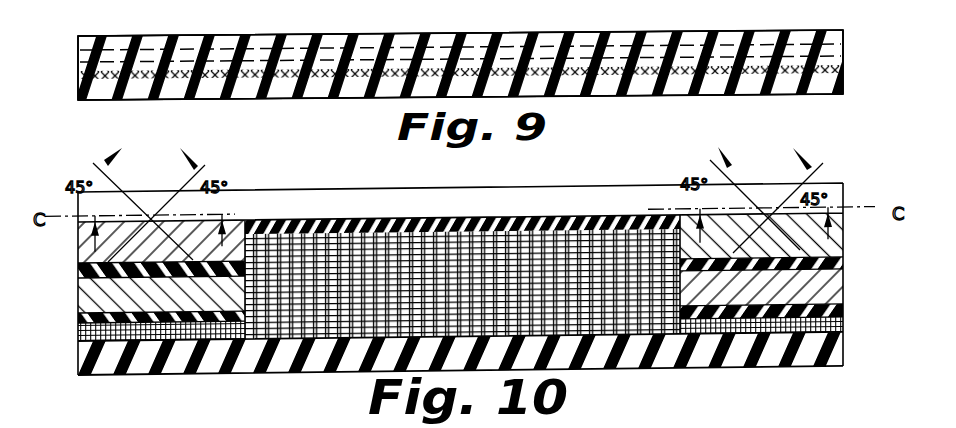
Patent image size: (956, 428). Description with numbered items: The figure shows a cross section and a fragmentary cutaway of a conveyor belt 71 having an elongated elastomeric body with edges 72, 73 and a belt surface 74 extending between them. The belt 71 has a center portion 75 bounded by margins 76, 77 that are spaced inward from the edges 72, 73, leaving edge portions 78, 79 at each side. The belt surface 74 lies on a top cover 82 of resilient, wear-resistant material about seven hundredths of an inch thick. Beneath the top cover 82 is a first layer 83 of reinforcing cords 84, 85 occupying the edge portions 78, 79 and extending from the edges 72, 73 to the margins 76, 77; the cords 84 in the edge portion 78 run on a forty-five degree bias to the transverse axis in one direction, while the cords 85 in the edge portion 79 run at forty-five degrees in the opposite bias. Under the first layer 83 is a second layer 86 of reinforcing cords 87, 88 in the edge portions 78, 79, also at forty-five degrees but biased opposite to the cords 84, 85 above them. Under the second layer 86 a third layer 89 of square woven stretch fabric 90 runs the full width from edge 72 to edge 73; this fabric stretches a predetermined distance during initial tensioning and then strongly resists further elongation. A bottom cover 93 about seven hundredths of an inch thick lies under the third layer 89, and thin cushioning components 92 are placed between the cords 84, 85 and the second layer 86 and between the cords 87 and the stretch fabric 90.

In FIG. 9, the belt 71 is at (830, 31).
In FIG. 10, the belt 71 is at (838, 185).
In FIG. 9, the edge 72 is at (78, 55).
In FIG. 10, the edge 72 is at (78, 198).
In FIG. 9, the edge 73 is at (840, 55).
In FIG. 10, the edge 73 is at (843, 222).
In FIG. 9, the belt surface 74 is at (463, 32).
In FIG. 10, the belt surface 74 is at (557, 205).
In FIG. 9, the center portion 75 is at (552, 50).
In FIG. 10, the center portion 75 is at (487, 216).
In FIG. 9, the margin 76 is at (243, 52).
In FIG. 10, the margin 76 is at (245, 232).
In FIG. 9, the margin 77 is at (680, 45).
In FIG. 10, the margin 77 is at (645, 192).
In FIG. 9, the edge portion 78 is at (133, 42).
In FIG. 10, the edge portion 78 is at (170, 356).
In FIG. 9, the edge portion 79 is at (708, 36).
In FIG. 10, the edge portion 79 is at (765, 332).
In FIG. 9, the top cover 82 is at (765, 32).
In FIG. 10, the top cover 82 is at (843, 196).
In FIG. 9, the first layer 83 is at (102, 50).
In FIG. 10, the first layer 83 is at (90, 233).
In FIG. 10, the reinforcing cords 84 is at (112, 250).
In FIG. 10, the reinforcing cords 85 is at (712, 163).
In FIG. 9, the second layer 86 is at (828, 78).
In FIG. 10, the second layer 86 is at (95, 318).
In FIG. 10, the reinforcing cords 87 is at (110, 300).
In FIG. 10, the reinforcing cords 88 is at (824, 165).
In FIG. 9, the third layer 89 is at (320, 82).
In FIG. 10, the third layer 89 is at (603, 345).
In FIG. 10, the square woven stretch fabric 90 is at (358, 330).
In FIG. 10, the cushioning components 92 is at (90, 342).
In FIG. 9, the bottom cover 93 is at (713, 84).
In FIG. 10, the bottom cover 93 is at (828, 352).